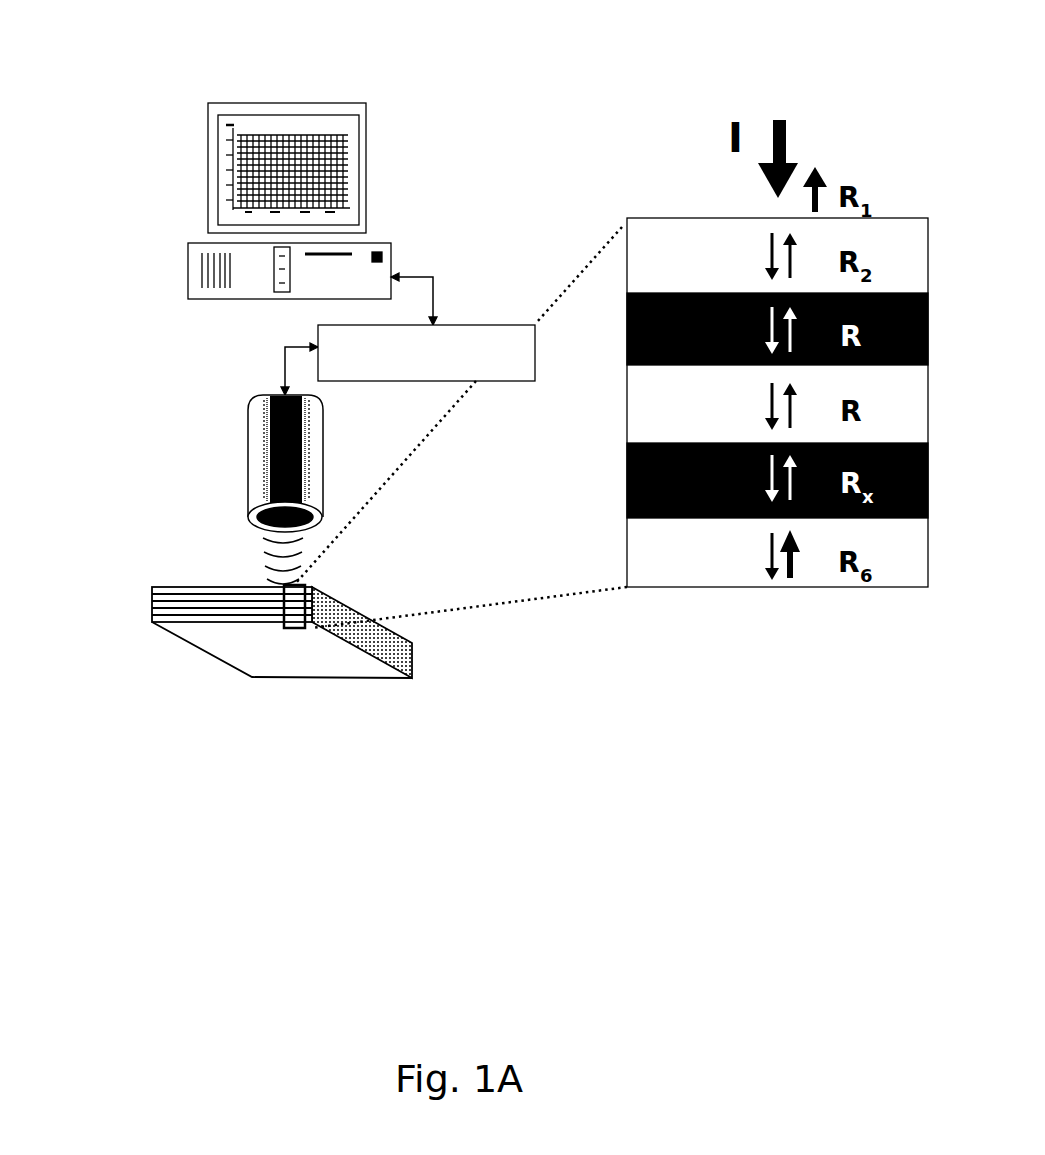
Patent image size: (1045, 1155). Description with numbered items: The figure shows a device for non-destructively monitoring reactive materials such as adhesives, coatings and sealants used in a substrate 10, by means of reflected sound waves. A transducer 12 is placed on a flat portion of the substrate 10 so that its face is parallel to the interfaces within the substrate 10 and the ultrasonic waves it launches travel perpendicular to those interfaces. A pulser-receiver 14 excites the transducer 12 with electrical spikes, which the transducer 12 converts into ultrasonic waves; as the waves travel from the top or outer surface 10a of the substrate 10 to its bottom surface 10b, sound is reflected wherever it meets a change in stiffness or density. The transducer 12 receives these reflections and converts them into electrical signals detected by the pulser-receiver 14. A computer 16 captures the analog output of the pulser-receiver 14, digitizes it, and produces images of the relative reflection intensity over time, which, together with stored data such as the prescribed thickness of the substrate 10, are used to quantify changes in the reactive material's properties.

The substrate 10 is at (225, 652).
The top or outer surface of the substrate 10a is at (148, 580).
The bottom surface of the substrate 10b is at (148, 632).
The transducer 12 is at (225, 478).
The pulser-receiver 14 is at (490, 298).
The computer 16 is at (293, 98).